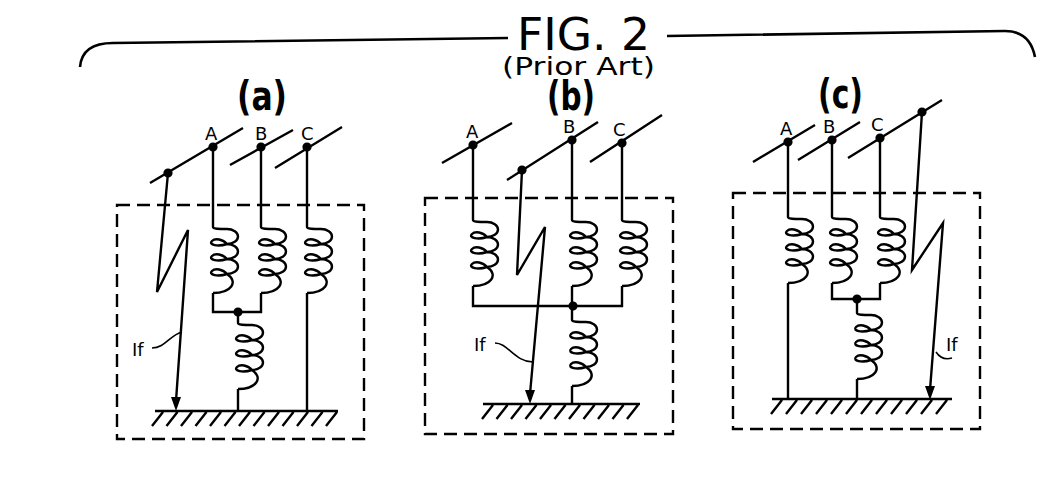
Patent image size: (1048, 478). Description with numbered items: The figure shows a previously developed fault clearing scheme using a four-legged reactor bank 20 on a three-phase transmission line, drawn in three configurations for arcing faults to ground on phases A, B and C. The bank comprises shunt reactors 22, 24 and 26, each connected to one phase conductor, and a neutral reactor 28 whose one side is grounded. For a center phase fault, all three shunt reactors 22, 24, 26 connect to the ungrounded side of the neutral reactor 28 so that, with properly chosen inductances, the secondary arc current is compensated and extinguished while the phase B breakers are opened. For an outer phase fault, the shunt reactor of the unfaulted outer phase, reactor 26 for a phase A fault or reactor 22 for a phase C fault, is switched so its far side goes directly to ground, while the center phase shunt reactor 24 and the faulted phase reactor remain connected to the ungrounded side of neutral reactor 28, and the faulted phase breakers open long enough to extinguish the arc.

The reactor bank 20 is at (367, 204).
The shunt reactor 22 is at (227, 224).
The shunt reactor 24 is at (273, 224).
The shunt reactor 26 is at (322, 224).
The neutral reactor 28 is at (260, 352).